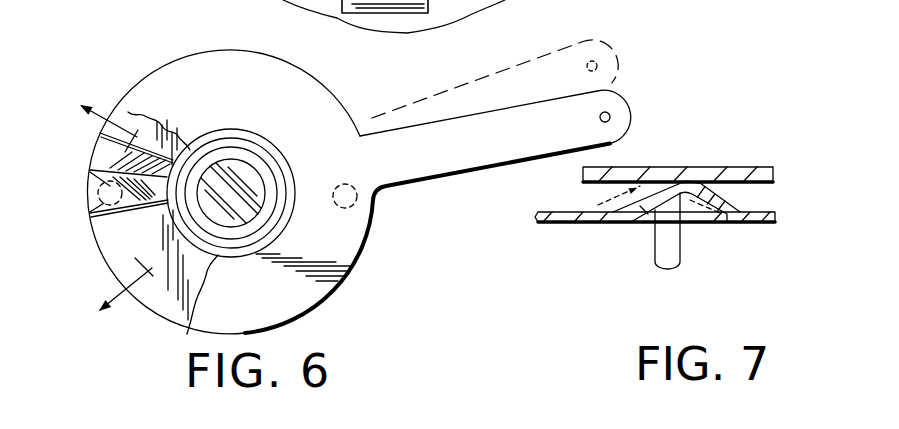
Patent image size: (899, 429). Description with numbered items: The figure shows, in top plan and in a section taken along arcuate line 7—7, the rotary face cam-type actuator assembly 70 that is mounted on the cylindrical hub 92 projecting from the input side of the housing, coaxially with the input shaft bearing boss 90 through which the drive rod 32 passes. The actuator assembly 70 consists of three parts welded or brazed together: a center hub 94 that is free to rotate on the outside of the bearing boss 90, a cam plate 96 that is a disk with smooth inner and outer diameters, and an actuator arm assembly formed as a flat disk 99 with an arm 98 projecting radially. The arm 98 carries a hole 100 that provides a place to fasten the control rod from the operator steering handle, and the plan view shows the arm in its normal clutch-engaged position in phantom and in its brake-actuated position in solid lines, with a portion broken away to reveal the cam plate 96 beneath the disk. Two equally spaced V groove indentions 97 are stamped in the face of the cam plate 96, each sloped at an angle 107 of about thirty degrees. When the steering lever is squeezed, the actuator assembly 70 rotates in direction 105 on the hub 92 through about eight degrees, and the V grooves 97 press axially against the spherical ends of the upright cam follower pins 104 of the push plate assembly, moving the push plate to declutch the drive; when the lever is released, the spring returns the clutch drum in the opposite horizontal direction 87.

In FIG. 6, the arcuate line 7— 7 is at (112, 205).
In FIG. 6, the drive rod 32 is at (233, 166).
In FIG. 6, the actuator assembly 70 is at (88, 148).
In FIG. 7, the actuator assembly 70 is at (767, 256).
In FIG. 7, the opposite horizontal direction 87 is at (697, 245).
In FIG. 6, the input shaft bearing boss 90 is at (200, 153).
In FIG. 6, the cylindrical hub 92 is at (268, 171).
In FIG. 6, the center hub 94 is at (258, 152).
In FIG. 6, the cam plate 96 is at (128, 112).
In FIG. 7, the cam plate 96 is at (563, 221).
In FIG. 6, the V groove indentions 97 is at (89, 181).
In FIG. 7, the V groove indentions 97 is at (705, 208).
In FIG. 6, the arm 98 is at (438, 162).
In FIG. 6, the flat disk 99 is at (302, 300).
In FIG. 7, the flat disk 99 is at (737, 172).
In FIG. 6, the hole 100 is at (600, 117).
In FIG. 6, the pins 104 is at (99, 207).
In FIG. 7, the pins 104 is at (657, 256).
In FIG. 6, the direction 105 is at (647, 46).
In FIG. 7, the angle 107 is at (645, 236).